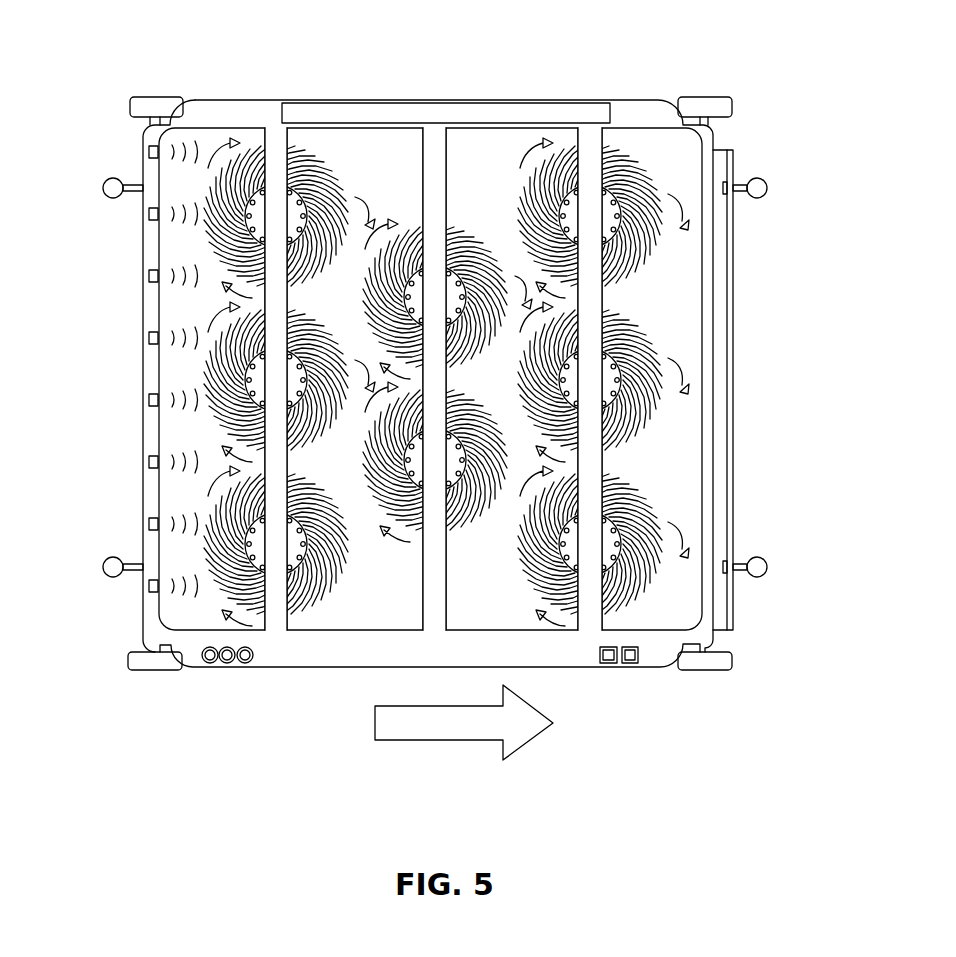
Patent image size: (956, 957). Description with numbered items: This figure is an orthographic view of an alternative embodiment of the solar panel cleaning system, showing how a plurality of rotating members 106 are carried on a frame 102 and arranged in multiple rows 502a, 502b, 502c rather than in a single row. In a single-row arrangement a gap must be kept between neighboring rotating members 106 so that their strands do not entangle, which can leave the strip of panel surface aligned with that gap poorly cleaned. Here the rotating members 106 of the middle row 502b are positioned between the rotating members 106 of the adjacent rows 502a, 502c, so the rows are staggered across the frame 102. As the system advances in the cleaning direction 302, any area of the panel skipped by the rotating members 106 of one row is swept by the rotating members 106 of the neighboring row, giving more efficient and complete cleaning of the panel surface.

The frame 102 is at (335, 668).
The rotating members 106 is at (307, 607).
The cleaning direction 302 is at (375, 740).
The first row of rotating members 502a is at (277, 140).
The second row of rotating members 502b is at (435, 140).
The third row of rotating members 502c is at (590, 140).